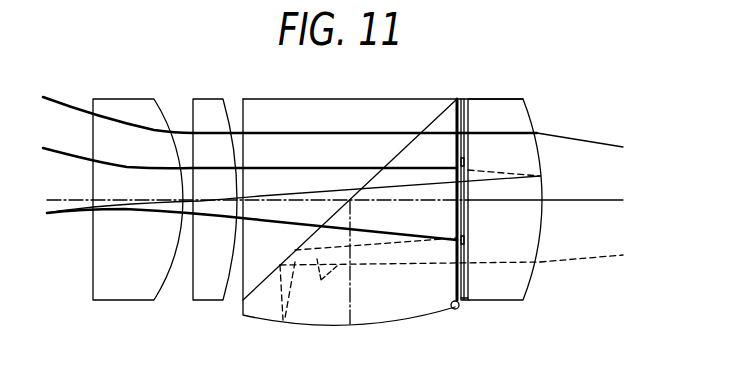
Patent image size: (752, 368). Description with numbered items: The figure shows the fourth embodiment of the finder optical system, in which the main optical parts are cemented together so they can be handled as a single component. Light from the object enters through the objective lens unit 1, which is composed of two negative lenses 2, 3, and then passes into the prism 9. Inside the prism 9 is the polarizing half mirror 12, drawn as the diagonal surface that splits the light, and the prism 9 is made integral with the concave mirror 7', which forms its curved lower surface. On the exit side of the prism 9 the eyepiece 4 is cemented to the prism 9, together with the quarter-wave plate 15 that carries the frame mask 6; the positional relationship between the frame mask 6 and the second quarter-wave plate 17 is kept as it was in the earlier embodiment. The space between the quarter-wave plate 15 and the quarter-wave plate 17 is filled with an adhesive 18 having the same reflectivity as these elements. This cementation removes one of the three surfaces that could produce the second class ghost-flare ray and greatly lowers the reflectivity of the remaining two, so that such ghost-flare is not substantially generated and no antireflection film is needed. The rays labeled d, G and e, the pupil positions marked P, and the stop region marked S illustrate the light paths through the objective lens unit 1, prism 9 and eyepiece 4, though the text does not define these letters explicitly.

The objective lens unit 1 is at (162, 200).
The negative lens 2 is at (122, 300).
The negative lens 3 is at (200, 300).
The eyepiece 4 is at (503, 99).
The frame mask 6 is at (464, 240).
The concave mirror 7' is at (392, 332).
The prism 9 is at (383, 210).
The polarizing half mirror 12 is at (412, 142).
The quarter-wave plate 15 is at (468, 182).
The quarter-wave plate 17 is at (465, 302).
The adhesive 18 is at (458, 309).
The ray d is at (325, 116).
The ray G is at (282, 156).
The ray e is at (283, 208).
The pupil plane P is at (402, 172).
The stop S is at (451, 279).